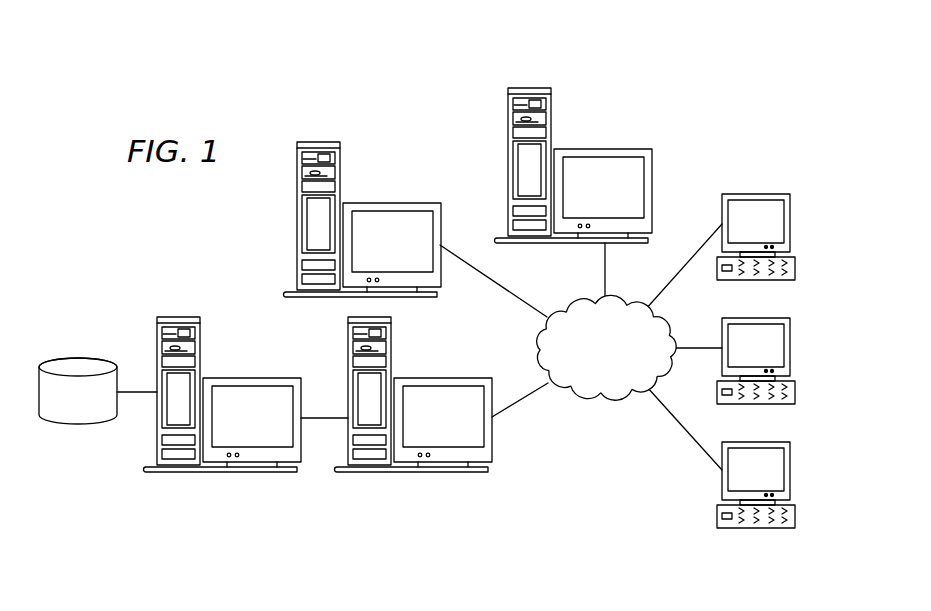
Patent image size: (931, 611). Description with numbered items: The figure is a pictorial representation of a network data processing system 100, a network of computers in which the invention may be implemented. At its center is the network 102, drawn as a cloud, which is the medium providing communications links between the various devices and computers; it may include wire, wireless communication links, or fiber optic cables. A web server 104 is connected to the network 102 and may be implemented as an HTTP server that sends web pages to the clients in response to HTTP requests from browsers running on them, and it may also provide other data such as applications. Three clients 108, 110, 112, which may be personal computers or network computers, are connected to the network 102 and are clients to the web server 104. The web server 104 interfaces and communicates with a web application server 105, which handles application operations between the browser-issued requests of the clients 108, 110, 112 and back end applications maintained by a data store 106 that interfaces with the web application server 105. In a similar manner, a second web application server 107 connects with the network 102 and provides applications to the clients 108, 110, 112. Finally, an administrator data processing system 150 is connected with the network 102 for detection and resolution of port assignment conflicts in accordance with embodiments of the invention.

The network data processing system 100 is at (210, 258).
The network 102 is at (575, 302).
The web server 104 is at (443, 377).
The web application server 105 is at (250, 378).
The data store 106 is at (79, 425).
The web application server 107 is at (611, 148).
The client 108 is at (790, 222).
The client 110 is at (790, 347).
The client 112 is at (790, 470).
The administrator data processing system 150 is at (395, 203).